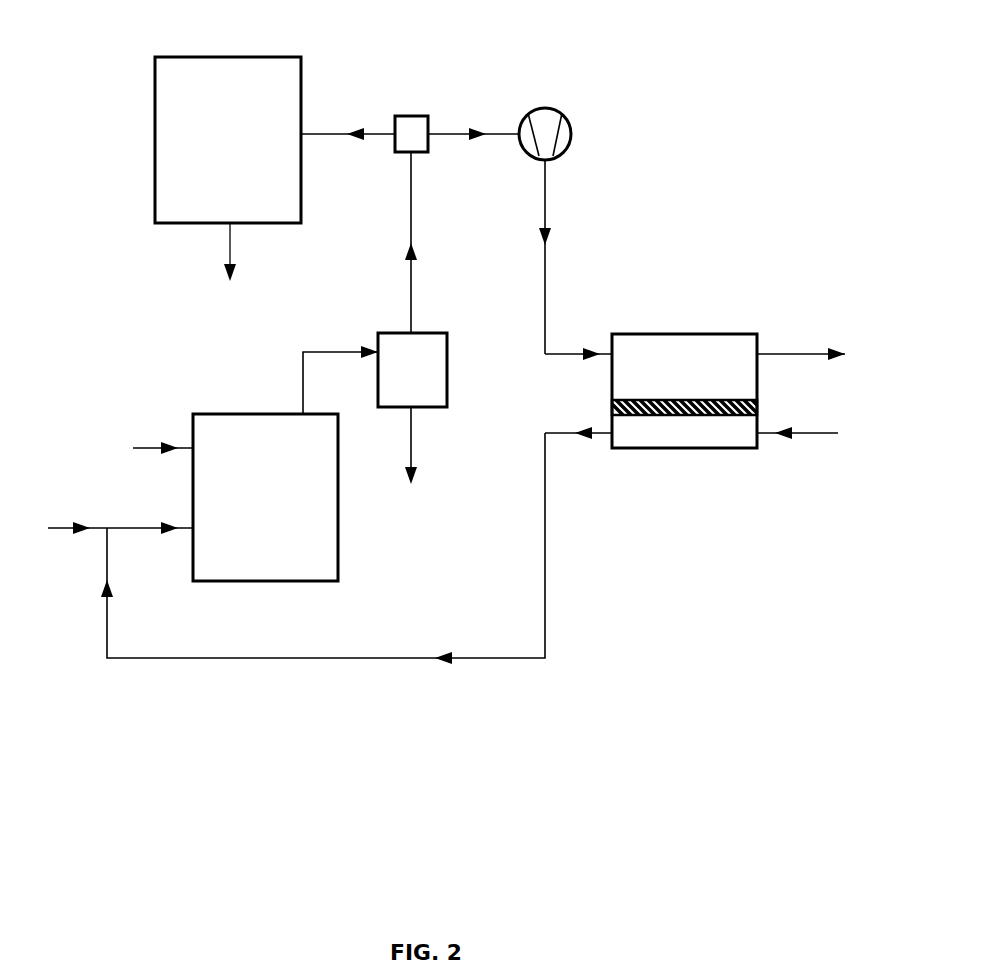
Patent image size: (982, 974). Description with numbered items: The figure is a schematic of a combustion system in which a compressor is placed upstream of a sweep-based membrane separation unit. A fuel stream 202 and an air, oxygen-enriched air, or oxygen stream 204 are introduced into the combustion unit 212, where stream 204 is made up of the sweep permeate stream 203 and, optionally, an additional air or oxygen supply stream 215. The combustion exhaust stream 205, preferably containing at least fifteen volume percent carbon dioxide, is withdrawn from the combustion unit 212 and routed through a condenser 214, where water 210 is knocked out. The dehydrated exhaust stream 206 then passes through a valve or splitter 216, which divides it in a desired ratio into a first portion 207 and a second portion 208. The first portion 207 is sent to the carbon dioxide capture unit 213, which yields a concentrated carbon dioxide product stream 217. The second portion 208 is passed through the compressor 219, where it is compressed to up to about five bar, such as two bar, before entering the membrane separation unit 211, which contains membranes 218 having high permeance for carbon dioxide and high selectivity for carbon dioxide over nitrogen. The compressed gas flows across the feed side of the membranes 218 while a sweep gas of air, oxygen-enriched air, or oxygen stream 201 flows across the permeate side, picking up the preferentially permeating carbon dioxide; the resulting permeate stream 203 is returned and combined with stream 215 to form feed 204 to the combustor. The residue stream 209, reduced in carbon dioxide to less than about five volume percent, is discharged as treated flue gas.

The sweep gas stream 201 is at (817, 432).
The fuel stream 202 is at (140, 449).
The permeate stream 203 is at (356, 557).
The air, oxygen-enriched air, or oxygen stream 204 is at (150, 517).
The combustion exhaust stream 205 is at (340, 370).
The dehydrated exhaust stream 206 is at (431, 242).
The first portion 207 is at (348, 121).
The second portion 208 is at (518, 128).
The residue stream 209 is at (820, 354).
The water 210 is at (413, 462).
The membrane separation unit 211 is at (720, 334).
The combustion unit 212 is at (225, 414).
The carbon dioxide capture unit 213 is at (155, 160).
The condenser 214 is at (447, 368).
The additional air or oxygen supply stream 215 is at (67, 517).
The valve or splitter 216 is at (411, 116).
The concentrated carbon dioxide product stream 217 is at (207, 255).
The membranes 218 is at (757, 405).
The compressor 219 is at (568, 118).